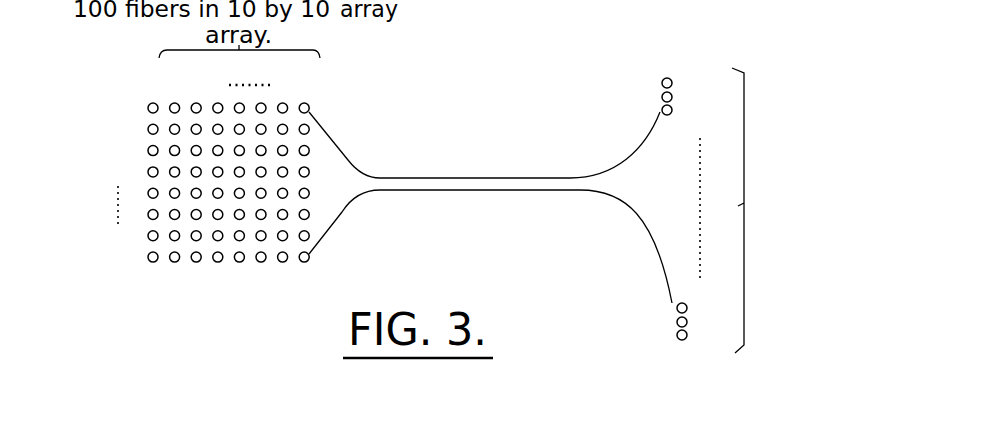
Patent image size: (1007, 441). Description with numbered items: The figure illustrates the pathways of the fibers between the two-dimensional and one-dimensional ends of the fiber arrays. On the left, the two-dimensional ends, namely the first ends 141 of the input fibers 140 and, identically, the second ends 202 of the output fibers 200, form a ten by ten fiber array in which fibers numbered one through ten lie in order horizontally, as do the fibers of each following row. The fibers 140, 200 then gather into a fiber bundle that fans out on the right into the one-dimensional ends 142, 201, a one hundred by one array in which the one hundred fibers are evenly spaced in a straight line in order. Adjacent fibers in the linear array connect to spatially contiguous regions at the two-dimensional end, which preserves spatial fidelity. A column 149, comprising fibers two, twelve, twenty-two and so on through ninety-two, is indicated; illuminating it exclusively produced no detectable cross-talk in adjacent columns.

The column 149 is at (173, 60).
The first end 141 is at (173, 205).
The second end 202 is at (193, 260).
The optical fiber 140 is at (490, 207).
The component fiber 200 is at (397, 190).
The second end 142 is at (744, 219).
The first end 201 is at (680, 340).